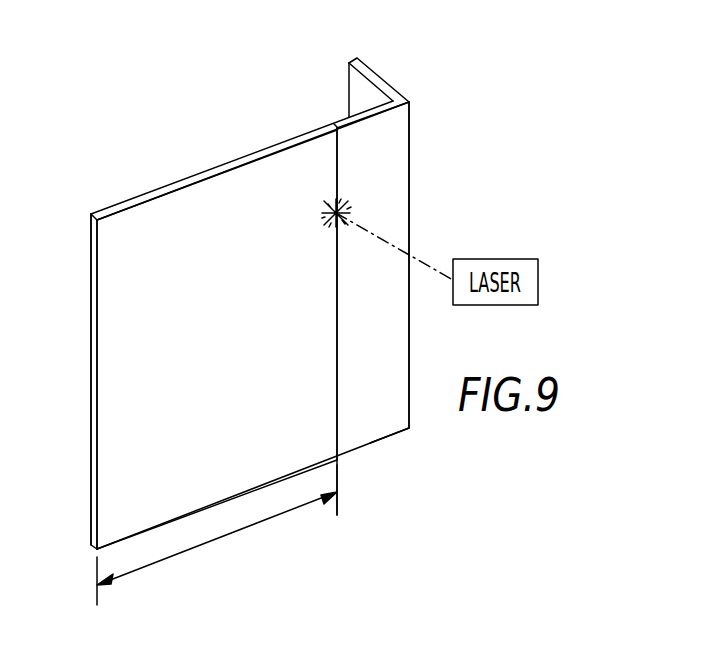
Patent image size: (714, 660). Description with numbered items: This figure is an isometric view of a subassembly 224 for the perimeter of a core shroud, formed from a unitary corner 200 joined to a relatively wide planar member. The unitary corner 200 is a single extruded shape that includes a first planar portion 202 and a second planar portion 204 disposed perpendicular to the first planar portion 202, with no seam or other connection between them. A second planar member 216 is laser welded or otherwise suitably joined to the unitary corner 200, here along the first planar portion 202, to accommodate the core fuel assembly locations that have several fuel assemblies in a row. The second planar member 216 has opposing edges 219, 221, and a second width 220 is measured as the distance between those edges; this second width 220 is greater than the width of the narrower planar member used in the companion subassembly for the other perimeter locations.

The unitary corner 200 is at (438, 200).
The first planar portion 202 is at (380, 150).
The second planar portion 204 is at (382, 79).
The second planar member 216 is at (233, 341).
The edge 219 is at (337, 353).
The second width 220 is at (225, 538).
The edge 221 is at (90, 313).
The subassembly 224 is at (472, 467).